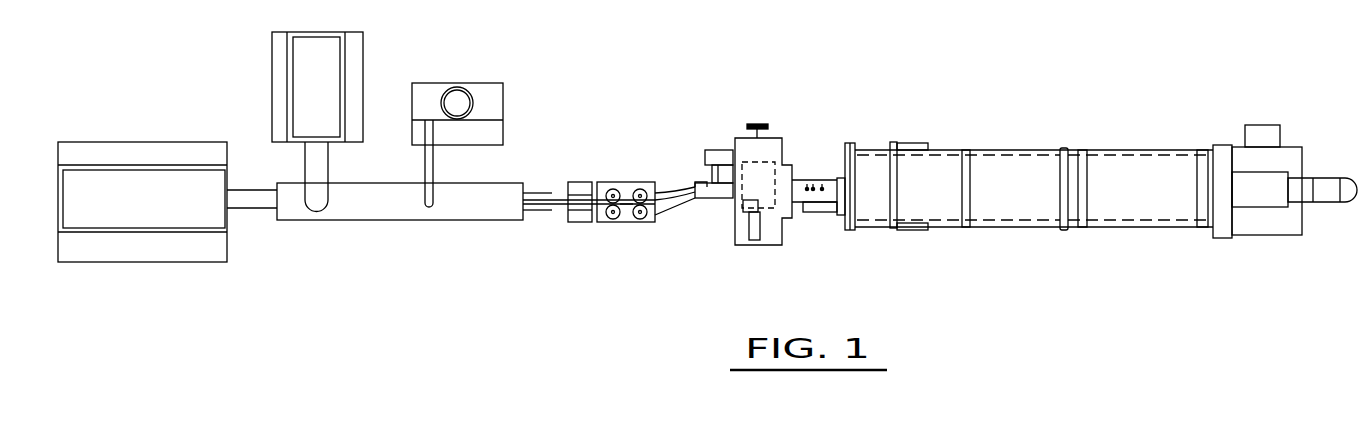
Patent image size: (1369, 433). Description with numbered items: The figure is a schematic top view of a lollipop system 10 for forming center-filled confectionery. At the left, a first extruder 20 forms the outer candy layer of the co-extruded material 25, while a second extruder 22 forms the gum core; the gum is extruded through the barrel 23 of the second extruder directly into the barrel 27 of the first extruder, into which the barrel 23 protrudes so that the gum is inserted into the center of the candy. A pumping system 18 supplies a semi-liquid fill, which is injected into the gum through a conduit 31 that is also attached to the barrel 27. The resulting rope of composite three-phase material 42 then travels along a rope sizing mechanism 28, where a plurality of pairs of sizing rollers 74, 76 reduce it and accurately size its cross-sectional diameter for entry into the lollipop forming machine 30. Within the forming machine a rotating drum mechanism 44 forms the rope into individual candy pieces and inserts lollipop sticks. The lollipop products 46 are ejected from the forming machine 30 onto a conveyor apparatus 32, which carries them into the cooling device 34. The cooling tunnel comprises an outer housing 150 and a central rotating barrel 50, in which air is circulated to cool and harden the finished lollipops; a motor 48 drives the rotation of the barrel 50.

The lollipop system 10 is at (268, 307).
The pumping system 18 is at (460, 97).
The first extruder 20 is at (142, 138).
The second extruder 22 is at (302, 67).
The barrel 23 is at (325, 170).
The co-extruded material 25 is at (540, 212).
The barrel 27 is at (293, 213).
The rope sizing mechanism 28 is at (602, 182).
The lollipop forming machine 30 is at (773, 138).
The conduit 31 is at (433, 172).
The conveyor apparatus 32 is at (822, 213).
The cooling device 34 is at (998, 228).
The rope of composite three-phase material 42 is at (628, 210).
The rotating drum mechanism 44 is at (770, 217).
The lollipop products 46 is at (815, 182).
The motor 48 is at (1222, 145).
The rotating barrel 50 is at (992, 155).
The sizing rollers 74 is at (608, 223).
The sizing rollers 76 is at (643, 223).
The outer housing 150 is at (1118, 150).